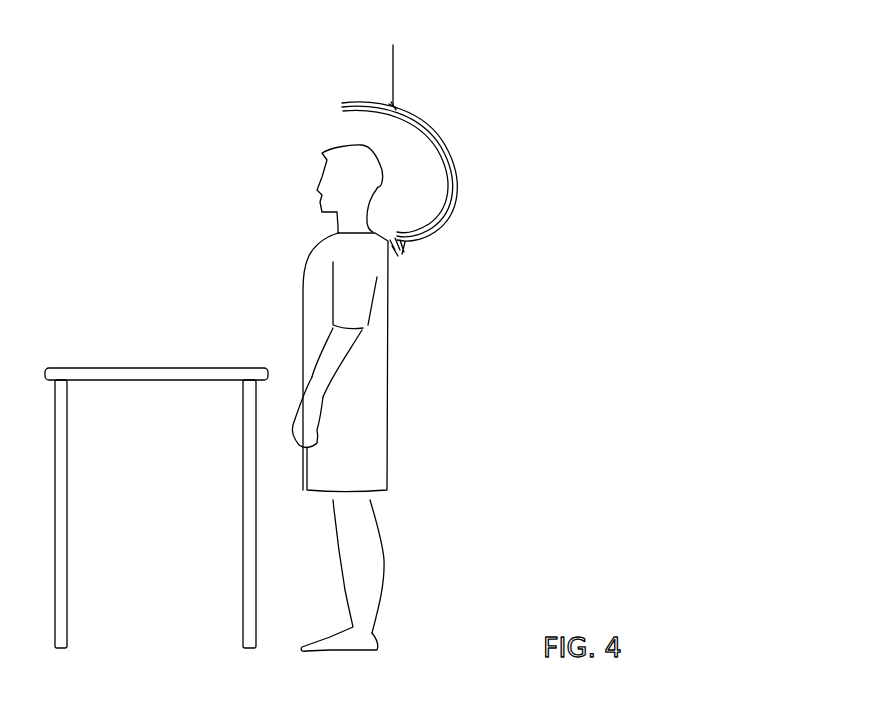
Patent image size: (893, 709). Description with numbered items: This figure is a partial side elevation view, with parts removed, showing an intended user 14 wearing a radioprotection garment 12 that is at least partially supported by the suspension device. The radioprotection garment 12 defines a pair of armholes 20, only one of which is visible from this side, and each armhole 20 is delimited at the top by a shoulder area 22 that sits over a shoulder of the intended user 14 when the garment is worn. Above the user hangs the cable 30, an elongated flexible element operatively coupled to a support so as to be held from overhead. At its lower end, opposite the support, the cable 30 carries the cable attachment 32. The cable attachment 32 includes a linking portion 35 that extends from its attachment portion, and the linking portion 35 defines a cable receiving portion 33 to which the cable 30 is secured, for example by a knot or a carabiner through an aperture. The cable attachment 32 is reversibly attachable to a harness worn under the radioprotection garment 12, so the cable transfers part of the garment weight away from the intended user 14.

The radioprotection garment 12 is at (378, 297).
The intended user 14 is at (223, 208).
The armhole 20 is at (363, 328).
The shoulder area 22 is at (348, 258).
The cable 30 is at (392, 52).
The cable attachment 32 is at (510, 190).
The cable receiving portion 33 is at (393, 107).
The linking portion 35 is at (438, 142).